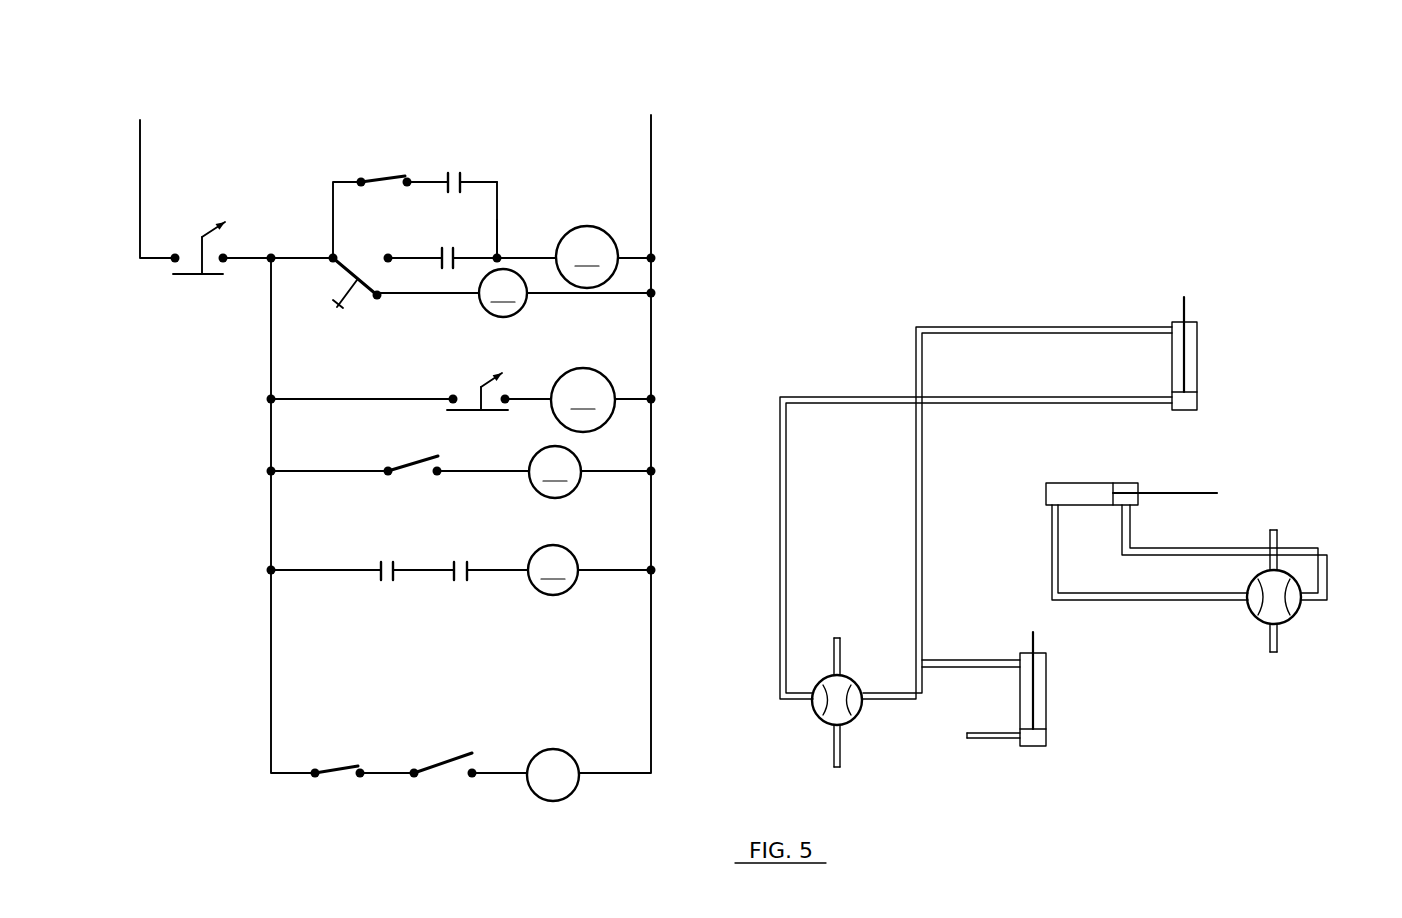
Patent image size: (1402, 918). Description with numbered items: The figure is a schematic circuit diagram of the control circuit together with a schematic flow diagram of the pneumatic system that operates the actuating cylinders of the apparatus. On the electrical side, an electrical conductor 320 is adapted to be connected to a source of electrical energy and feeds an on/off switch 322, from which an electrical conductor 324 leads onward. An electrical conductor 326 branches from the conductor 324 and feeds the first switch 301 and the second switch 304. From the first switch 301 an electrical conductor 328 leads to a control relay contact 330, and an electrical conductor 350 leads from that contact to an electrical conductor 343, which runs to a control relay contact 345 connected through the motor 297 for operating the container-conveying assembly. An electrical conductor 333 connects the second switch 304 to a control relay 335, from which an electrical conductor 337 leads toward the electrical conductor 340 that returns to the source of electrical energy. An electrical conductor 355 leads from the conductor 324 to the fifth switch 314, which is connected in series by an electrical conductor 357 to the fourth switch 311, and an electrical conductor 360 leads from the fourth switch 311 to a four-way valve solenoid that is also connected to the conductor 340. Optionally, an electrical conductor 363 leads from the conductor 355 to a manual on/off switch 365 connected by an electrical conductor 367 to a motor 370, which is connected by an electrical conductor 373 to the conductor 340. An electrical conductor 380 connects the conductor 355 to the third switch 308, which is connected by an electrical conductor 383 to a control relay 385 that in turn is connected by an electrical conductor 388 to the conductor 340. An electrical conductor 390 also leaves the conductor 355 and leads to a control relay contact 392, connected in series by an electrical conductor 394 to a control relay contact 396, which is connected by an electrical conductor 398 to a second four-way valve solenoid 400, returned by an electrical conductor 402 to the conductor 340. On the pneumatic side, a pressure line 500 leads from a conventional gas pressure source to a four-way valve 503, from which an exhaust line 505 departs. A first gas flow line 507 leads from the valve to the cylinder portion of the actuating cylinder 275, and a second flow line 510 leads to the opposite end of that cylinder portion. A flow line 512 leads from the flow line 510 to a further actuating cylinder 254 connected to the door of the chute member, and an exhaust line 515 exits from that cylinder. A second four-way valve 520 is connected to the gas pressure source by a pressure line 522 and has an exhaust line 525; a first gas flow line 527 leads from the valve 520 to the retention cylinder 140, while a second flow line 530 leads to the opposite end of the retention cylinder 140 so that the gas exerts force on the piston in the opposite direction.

The electrical conductor 320 is at (139, 170).
The on/off switch 322 is at (210, 280).
The electrical conductor 324 is at (253, 262).
The electrical conductor 326 is at (333, 215).
The first switch 301 is at (390, 175).
The electrical conductor 328 is at (422, 182).
The control relay contact 330 is at (462, 182).
The electrical conductor 350 is at (498, 190).
The electrical conductor 343 is at (498, 227).
The control relay contact 345 is at (438, 253).
The motor 297 is at (574, 257).
The electrical conductor 340 is at (653, 243).
The second switch 304 is at (353, 283).
The electrical conductor 333 is at (438, 295).
The control relay 335 is at (503, 293).
The electrical conductor 337 is at (550, 297).
The electrical conductor 355 is at (270, 339).
The electrical conductor 363 is at (368, 397).
The electrical conductor 367 is at (530, 393).
The manual on/off switch 365 is at (470, 413).
The motor 370 is at (583, 400).
The electrical conductor 373 is at (633, 407).
The third switch 308 is at (412, 462).
The electrical conductor 380 is at (345, 473).
The electrical conductor 383 is at (498, 473).
The control relay 385 is at (555, 472).
The electrical conductor 388 is at (598, 475).
The electrical conductor 390 is at (310, 568).
The control relay contact 392 is at (385, 560).
The electrical conductor 394 is at (433, 573).
The control relay contact 396 is at (458, 560).
The electrical conductor 398 is at (490, 573).
The second four-way valve solenoid 400 is at (553, 570).
The electrical conductor 402 is at (627, 573).
The electrical conductor 357 is at (392, 772).
The electrical conductor 360 is at (493, 770).
The fifth switch 314 is at (337, 775).
The fourth switch 311 is at (438, 767).
The second flow line 510 is at (1022, 325).
The flow line 512 is at (937, 658).
The first gas flow line 507 is at (787, 562).
The actuating cylinder 275 is at (1198, 332).
The hydraulic cylinder 254 is at (1102, 482).
The first gas flow line 527 is at (1070, 592).
The second flow line 530 is at (1327, 570).
The four-way valve 520 is at (1250, 607).
The exhaust line 525 is at (1277, 537).
The pressure line 522 is at (1277, 642).
The four-way valve 503 is at (842, 680).
The exhaust line 505 is at (835, 640).
The pressure line 500 is at (842, 752).
The retention cylinder 140 is at (1046, 683).
The exhaust line 515 is at (982, 738).